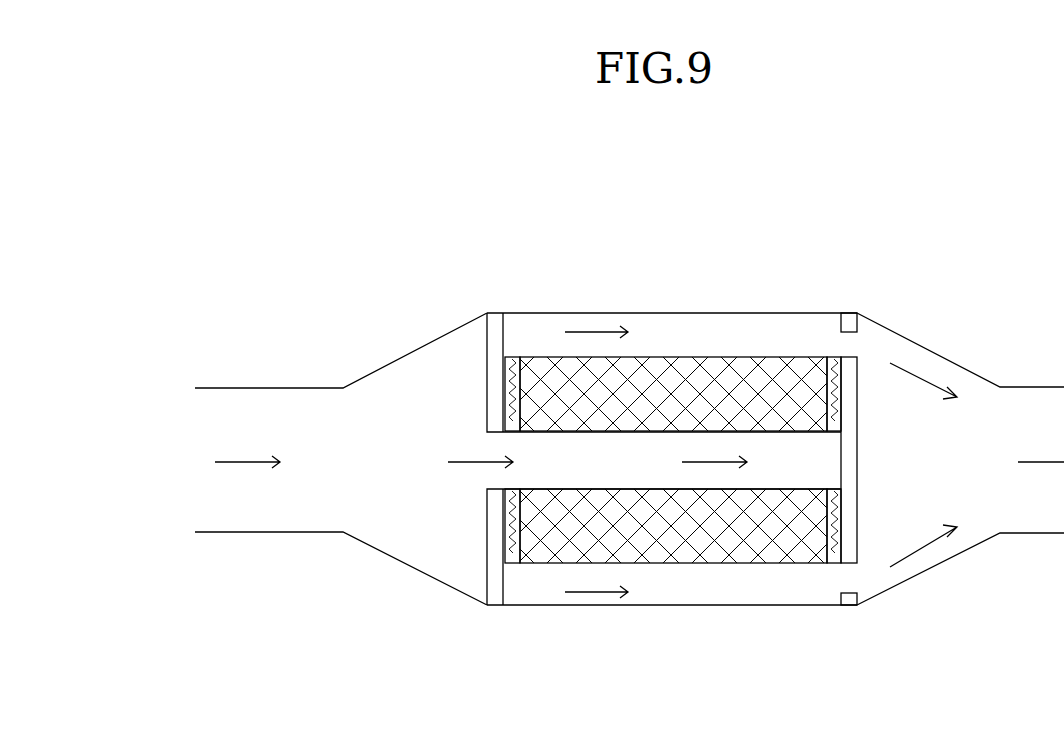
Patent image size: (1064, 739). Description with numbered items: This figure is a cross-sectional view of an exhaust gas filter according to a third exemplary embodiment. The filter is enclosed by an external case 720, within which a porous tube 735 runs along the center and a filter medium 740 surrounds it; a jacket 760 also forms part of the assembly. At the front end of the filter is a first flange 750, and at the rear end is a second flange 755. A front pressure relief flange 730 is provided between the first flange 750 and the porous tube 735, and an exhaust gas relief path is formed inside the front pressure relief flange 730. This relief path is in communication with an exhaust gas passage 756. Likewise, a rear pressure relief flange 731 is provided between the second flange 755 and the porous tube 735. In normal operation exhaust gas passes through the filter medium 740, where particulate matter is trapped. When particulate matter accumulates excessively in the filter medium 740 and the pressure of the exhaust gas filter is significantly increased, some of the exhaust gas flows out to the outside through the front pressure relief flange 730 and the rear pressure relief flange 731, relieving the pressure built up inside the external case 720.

The external case 720 is at (680, 313).
The front pressure relief flange 730 is at (507, 560).
The rear pressure relief flange 731 is at (841, 563).
The porous tube 735 is at (692, 475).
The filter medium 740 is at (639, 538).
The first flange 750 is at (490, 603).
The second flange 755 is at (850, 542).
The exhaust gas passage 756 is at (853, 343).
The jacket 760 is at (702, 358).